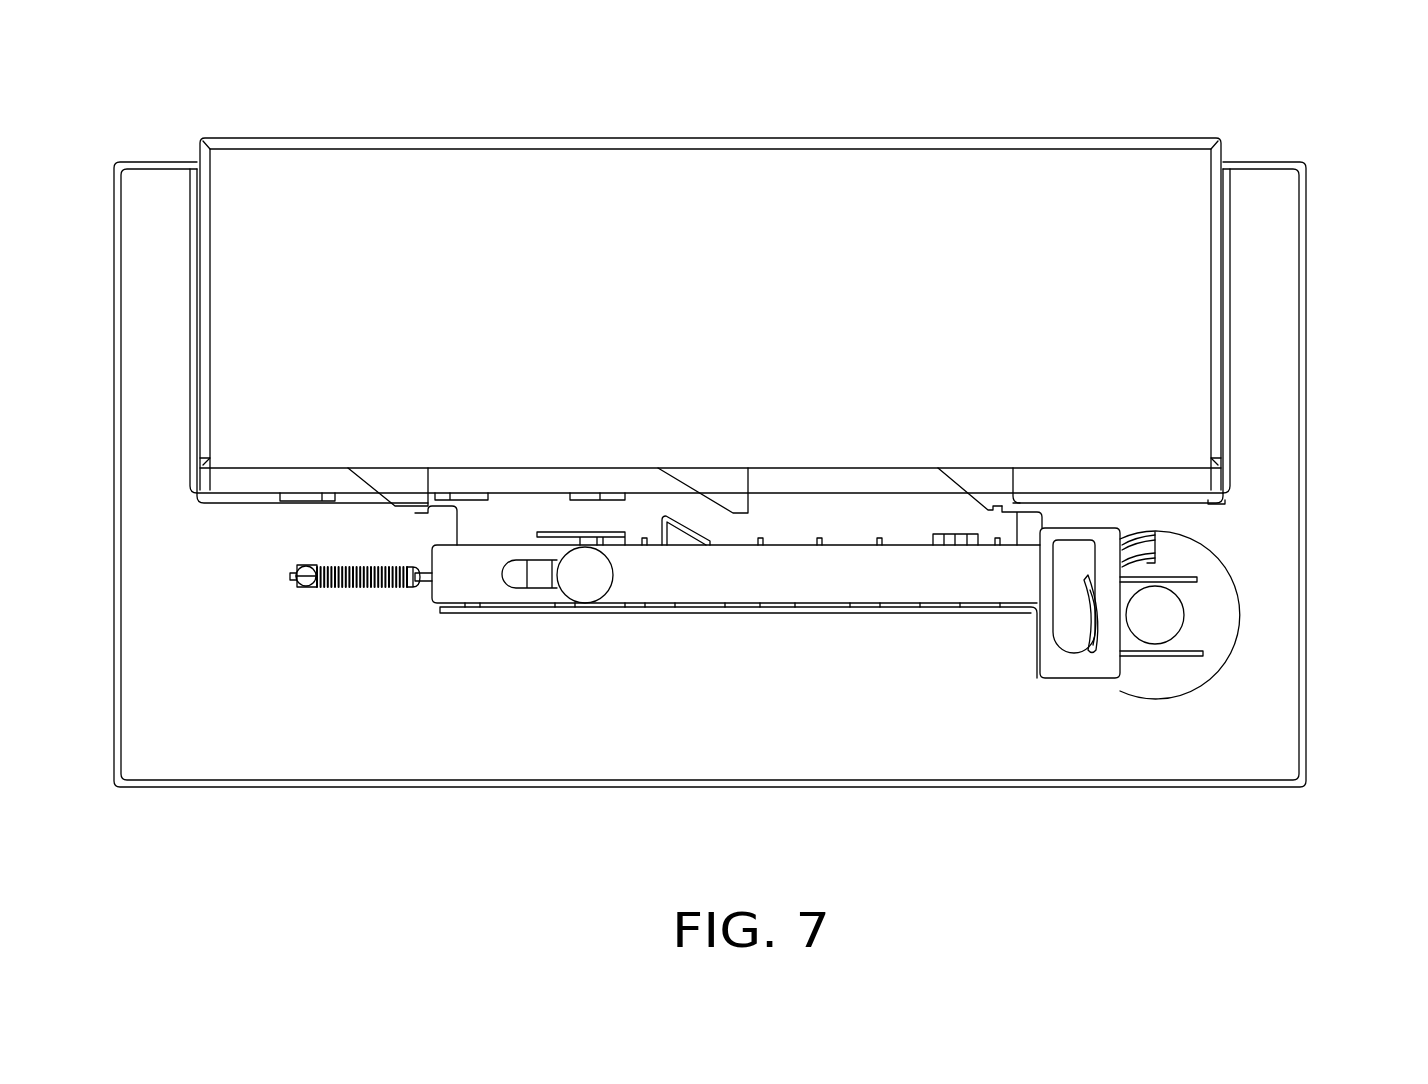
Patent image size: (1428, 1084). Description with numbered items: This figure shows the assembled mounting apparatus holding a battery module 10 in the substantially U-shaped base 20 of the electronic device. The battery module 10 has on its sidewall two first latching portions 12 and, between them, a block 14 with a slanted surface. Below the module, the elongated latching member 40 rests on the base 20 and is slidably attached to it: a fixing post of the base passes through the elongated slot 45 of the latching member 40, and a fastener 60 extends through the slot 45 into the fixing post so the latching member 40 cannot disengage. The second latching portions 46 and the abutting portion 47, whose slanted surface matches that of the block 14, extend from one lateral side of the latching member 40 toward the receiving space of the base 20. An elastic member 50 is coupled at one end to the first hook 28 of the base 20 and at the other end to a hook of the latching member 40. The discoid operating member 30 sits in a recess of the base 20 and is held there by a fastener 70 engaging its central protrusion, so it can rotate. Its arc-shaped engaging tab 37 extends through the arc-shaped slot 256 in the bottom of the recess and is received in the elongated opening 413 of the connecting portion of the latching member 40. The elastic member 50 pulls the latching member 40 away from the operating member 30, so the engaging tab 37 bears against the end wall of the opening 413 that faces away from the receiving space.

The battery module 10 is at (818, 190).
The first latching portion 12 is at (990, 490).
The block 14 is at (720, 512).
The base 20 is at (185, 730).
The first hook 28 is at (300, 583).
The operating member 30 is at (1188, 673).
The engaging tab 37 is at (1090, 637).
The latching member 40 is at (750, 585).
The slot 45 is at (557, 580).
The second latching portion 46 is at (1040, 516).
The abutting portion 47 is at (679, 538).
The elastic member 50 is at (362, 590).
The fastener 60 is at (598, 588).
The fastener 70 is at (1165, 615).
The arc-shaped slot 256 is at (1147, 560).
The opening 413 is at (1063, 620).